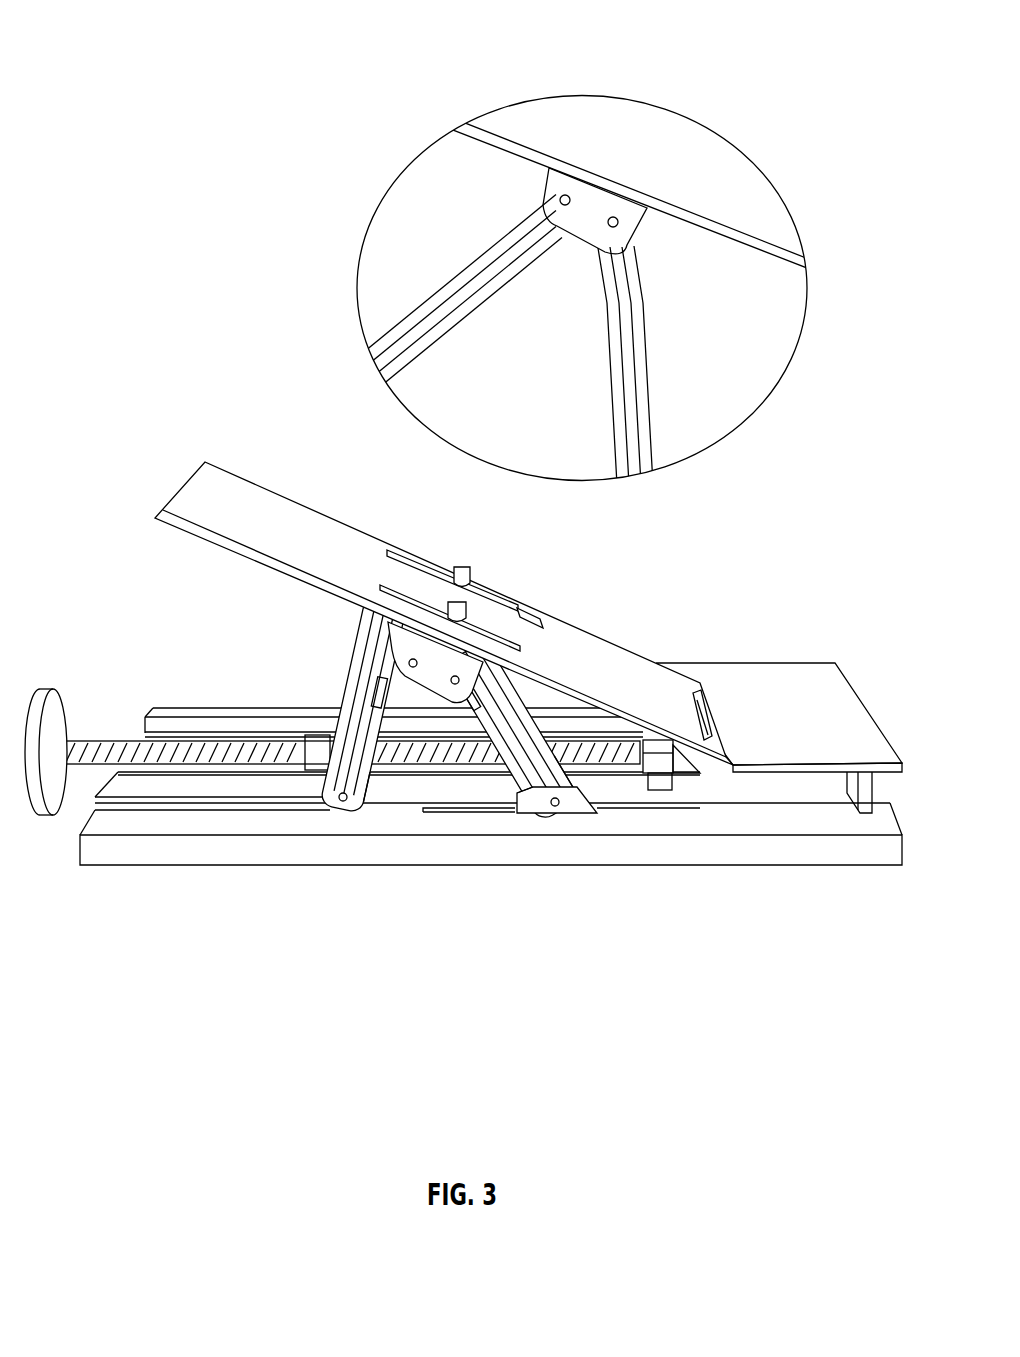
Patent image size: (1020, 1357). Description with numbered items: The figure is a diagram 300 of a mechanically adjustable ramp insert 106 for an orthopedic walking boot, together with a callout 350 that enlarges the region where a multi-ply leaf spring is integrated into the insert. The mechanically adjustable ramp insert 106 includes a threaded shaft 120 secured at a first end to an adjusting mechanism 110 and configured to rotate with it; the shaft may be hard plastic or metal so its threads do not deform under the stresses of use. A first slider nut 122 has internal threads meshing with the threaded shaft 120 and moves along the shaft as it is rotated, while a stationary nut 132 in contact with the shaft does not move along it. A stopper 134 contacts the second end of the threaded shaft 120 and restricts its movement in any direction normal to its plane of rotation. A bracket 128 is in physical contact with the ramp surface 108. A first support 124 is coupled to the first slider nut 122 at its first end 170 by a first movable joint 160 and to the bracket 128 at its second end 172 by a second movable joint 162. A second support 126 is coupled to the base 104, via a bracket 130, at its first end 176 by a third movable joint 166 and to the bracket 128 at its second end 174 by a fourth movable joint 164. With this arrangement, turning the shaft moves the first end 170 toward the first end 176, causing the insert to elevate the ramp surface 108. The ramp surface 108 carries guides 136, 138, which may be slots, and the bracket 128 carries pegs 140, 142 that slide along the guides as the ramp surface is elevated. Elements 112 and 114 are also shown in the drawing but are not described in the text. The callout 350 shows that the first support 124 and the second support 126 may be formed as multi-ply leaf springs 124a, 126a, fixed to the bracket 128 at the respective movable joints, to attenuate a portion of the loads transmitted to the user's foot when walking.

The diagram 300 is at (135, 46).
The callout 350 is at (728, 104).
The mechanically adjustable ramp insert 106 is at (644, 552).
The base 104 is at (527, 852).
The ramp surface 108 is at (195, 495).
The adjusting mechanism 110 is at (50, 687).
The clip 112 is at (700, 687).
The platform 114 is at (766, 673).
The threaded shaft 120 is at (132, 747).
The first slider nut 122 is at (310, 735).
The first support 124 is at (352, 708).
The multi-ply leaf spring 124a is at (498, 230).
The second support 126 is at (500, 742).
The multi-ply leaf spring 126a is at (617, 380).
The bracket 128 is at (390, 625).
The bracket 130 is at (565, 808).
The stationary nut 132 is at (643, 758).
The stopper 134 is at (660, 778).
The guide 136 is at (518, 610).
The guide 138 is at (380, 587).
The peg 140 is at (463, 570).
The peg 142 is at (453, 602).
The first movable joint 160 is at (342, 803).
The second movable joint 162 is at (409, 661).
The fourth movable joint 164 is at (458, 677).
The third movable joint 166 is at (553, 806).
The first end 170 is at (365, 793).
The second end 172 is at (366, 688).
The second end 174 is at (512, 676).
The first end 176 is at (518, 785).